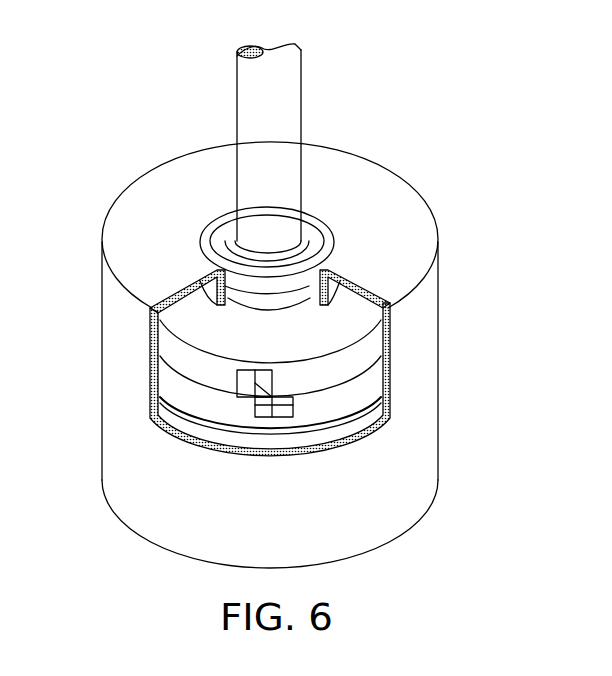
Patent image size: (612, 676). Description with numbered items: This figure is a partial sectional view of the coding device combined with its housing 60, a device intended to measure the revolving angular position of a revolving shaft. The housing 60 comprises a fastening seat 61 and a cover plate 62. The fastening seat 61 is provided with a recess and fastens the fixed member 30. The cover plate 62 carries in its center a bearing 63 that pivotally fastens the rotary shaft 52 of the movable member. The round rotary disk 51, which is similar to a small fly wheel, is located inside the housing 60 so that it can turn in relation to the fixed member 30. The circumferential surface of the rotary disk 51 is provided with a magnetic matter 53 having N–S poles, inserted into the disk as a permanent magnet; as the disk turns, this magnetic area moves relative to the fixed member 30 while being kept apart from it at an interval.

The housing 60 is at (319, 347).
The fastening seat 61 is at (441, 463).
The cover plate 62 is at (390, 187).
The bearing 63 is at (218, 228).
The rotary shaft 52 is at (293, 88).
The rotary disk 51 is at (342, 333).
The fixed member 30 is at (513, 457).
The magnetic matter 53 is at (237, 381).